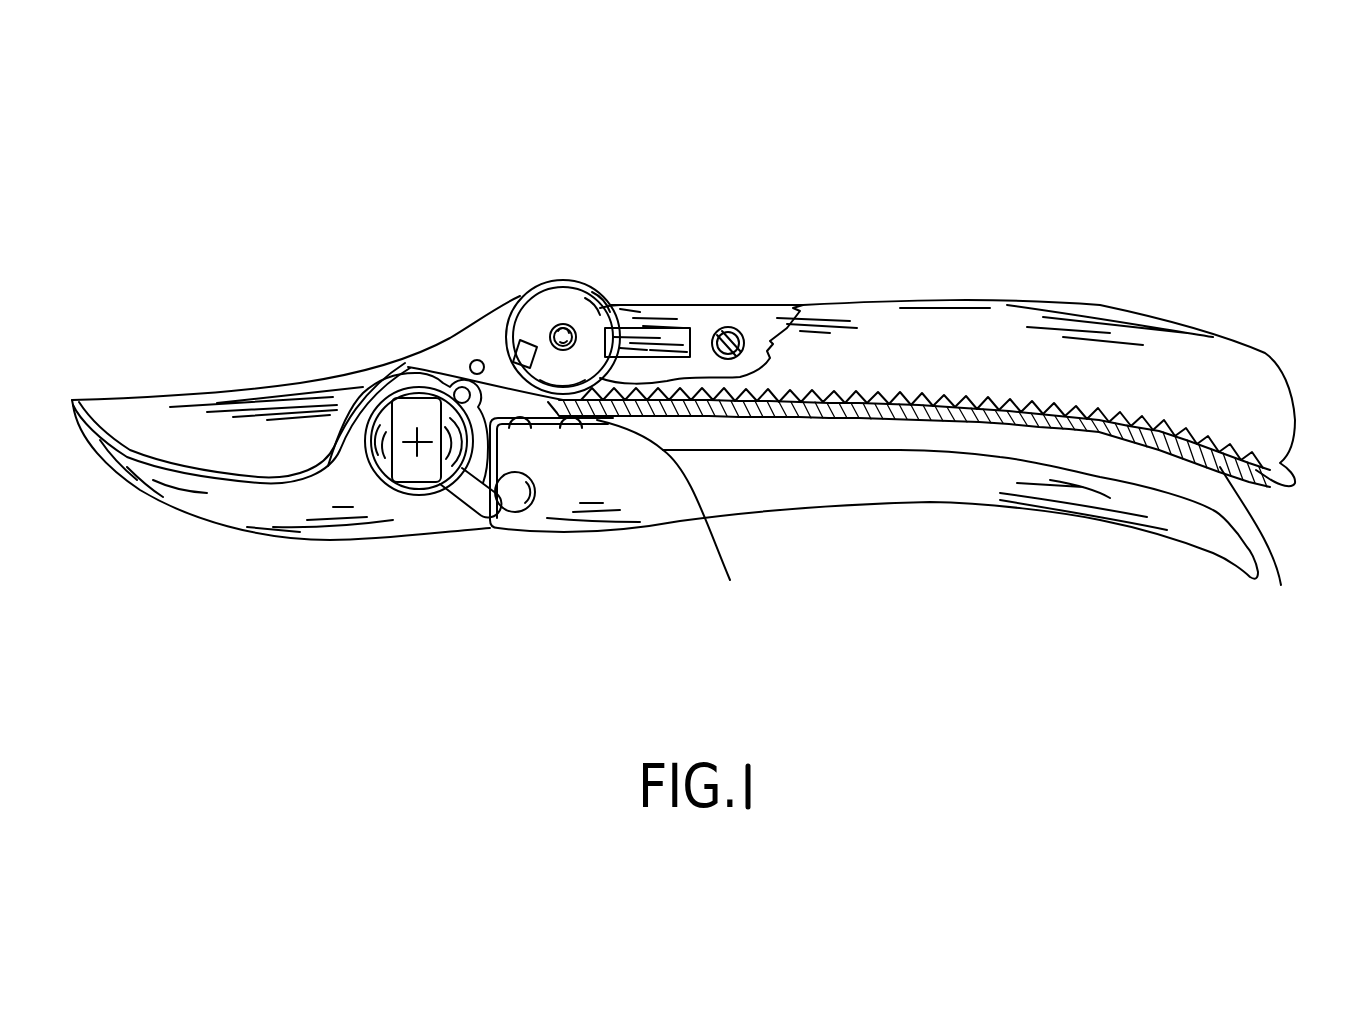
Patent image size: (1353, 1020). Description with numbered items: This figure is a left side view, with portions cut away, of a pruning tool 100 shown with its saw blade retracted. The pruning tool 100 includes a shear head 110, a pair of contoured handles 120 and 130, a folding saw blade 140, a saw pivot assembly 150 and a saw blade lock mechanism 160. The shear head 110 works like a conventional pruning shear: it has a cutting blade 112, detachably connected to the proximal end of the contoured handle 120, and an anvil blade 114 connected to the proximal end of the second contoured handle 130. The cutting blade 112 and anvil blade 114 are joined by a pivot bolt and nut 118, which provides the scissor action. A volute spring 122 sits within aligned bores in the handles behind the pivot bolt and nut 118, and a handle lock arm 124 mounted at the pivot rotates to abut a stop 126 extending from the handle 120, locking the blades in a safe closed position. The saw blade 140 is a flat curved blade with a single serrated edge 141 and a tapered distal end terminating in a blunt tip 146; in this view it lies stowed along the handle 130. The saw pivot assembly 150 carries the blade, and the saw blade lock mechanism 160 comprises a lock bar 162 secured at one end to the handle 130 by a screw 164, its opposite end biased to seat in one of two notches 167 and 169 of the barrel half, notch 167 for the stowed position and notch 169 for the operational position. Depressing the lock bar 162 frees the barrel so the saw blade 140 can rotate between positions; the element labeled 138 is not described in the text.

The pruning tool 100 is at (945, 203).
The shear head 110 is at (193, 390).
The cutting blade 112 is at (243, 410).
The anvil blade 114 is at (203, 507).
The pivot bolt and nut 118 is at (397, 460).
The contoured handle 120 is at (875, 512).
The volute spring 122 is at (730, 580).
The handle lock arm 124 is at (457, 516).
The stop 126 is at (515, 505).
The second contoured handle 130 is at (733, 298).
The pivot pin 138 is at (557, 330).
The folding saw blade 140 is at (1040, 318).
The serrated edge 141 is at (955, 408).
The blunt tip 146 is at (1281, 585).
The saw pivot assembly 150 is at (568, 284).
The saw blade lock mechanism 160 is at (633, 320).
The lock bar 162 is at (684, 340).
The screw 164 is at (745, 332).
The notch 167 is at (630, 325).
The notch 169 is at (512, 350).